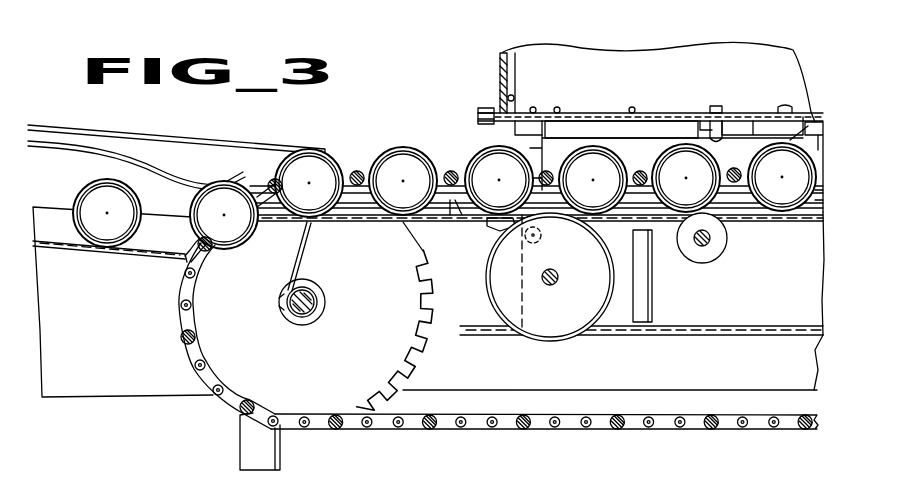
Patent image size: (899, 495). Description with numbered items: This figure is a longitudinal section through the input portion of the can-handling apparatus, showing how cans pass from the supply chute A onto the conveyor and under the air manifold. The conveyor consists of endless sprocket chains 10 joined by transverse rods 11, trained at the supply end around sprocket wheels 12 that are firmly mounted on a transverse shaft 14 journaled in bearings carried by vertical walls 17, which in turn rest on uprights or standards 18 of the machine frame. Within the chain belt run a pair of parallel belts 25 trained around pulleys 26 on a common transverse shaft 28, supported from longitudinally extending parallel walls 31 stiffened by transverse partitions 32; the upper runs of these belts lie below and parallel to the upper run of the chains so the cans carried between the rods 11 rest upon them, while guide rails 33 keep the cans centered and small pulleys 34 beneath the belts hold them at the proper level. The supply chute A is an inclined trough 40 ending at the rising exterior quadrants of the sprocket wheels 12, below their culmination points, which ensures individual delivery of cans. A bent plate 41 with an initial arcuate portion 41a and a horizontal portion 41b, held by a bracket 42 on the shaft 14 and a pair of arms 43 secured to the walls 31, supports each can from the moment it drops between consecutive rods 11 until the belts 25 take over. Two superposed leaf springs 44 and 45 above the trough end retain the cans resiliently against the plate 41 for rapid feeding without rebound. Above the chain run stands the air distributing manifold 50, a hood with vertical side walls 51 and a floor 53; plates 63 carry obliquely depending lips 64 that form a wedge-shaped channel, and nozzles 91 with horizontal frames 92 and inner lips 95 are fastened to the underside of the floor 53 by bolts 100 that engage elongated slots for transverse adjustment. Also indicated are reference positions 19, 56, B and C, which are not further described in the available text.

The endless sprocket chains 10 is at (663, 428).
The transverse rods 11 is at (282, 178).
The sprocket wheels 12 is at (247, 378).
The transverse shaft 14 is at (287, 313).
The vertical walls 17 is at (773, 378).
The uprights or standards 18 is at (265, 451).
The carrier 19 is at (455, 204).
The parallel belts 25 is at (740, 337).
The pulleys 26 is at (515, 316).
The transverse shaft 28 is at (545, 278).
The parallel walls 31 is at (806, 279).
The transverse partitions 32 is at (645, 309).
The guide rails 33 is at (455, 200).
The small pulleys 34 is at (718, 244).
The inclined trough 40 is at (48, 222).
The bent plate 41 is at (365, 222).
The arcuate portion 41a is at (215, 249).
The horizontal portion 41b is at (430, 218).
The bracket 42 is at (302, 276).
The arms 43 is at (493, 229).
The leaf spring 44 is at (118, 148).
The leaf spring 45 is at (205, 140).
The air distributing manifold 50 is at (697, 54).
The vertical side walls 51 is at (618, 78).
The floor 53 is at (522, 121).
The post 56 is at (500, 62).
The plate 63 is at (735, 112).
The obliquely depending lip 64 is at (595, 120).
The nozzle 91 is at (793, 138).
The horizontal frame 92 is at (725, 117).
The inner lip 95 is at (648, 160).
The bolts 100 is at (713, 106).
The supply chute A is at (78, 178).
The station B is at (362, 158).
The station C is at (562, 65).